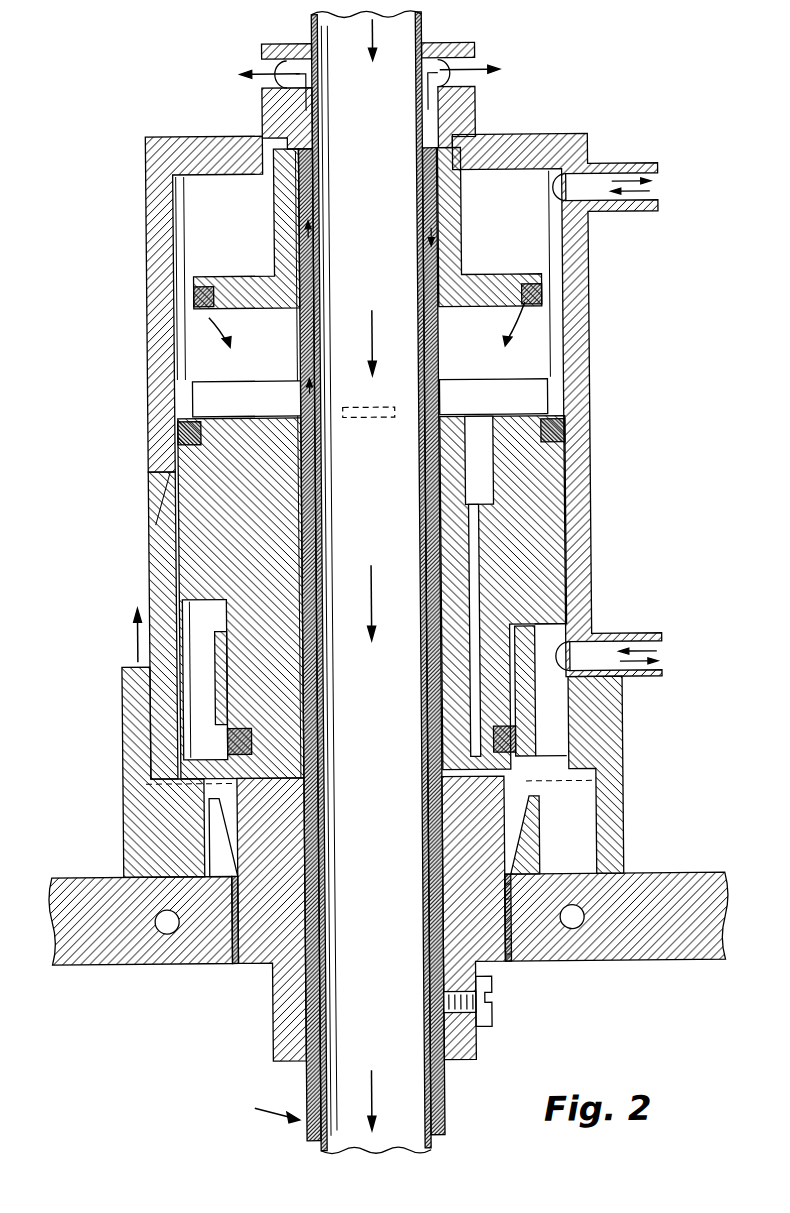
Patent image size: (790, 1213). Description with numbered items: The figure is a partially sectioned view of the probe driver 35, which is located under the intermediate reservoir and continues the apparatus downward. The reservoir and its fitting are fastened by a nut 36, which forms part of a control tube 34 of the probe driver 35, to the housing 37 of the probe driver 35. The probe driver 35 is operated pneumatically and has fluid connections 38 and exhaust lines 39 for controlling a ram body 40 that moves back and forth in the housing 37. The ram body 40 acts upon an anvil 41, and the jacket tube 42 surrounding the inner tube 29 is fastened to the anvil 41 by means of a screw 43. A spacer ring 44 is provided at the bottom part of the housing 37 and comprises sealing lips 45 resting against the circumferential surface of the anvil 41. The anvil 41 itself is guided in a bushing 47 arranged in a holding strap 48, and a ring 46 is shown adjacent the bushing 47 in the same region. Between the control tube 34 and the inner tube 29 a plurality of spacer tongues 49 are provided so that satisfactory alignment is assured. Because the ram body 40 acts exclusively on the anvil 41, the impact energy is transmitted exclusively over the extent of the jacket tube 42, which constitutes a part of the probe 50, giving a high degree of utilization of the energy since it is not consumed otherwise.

The inner tube 29 is at (424, 19).
The control tube 34 is at (303, 508).
The probe driver 35 is at (630, 329).
The nut 36 is at (262, 100).
The housing 37 is at (588, 385).
The fluid connections 38 is at (615, 165).
The exhaust lines 39 is at (470, 64).
The ram body 40 is at (545, 534).
The anvil 41 is at (262, 990).
The jacket tube 42 is at (428, 1101).
The screw 43 is at (486, 1012).
The spacer ring 44 is at (617, 762).
The sealing lips 45 is at (505, 812).
The bearing ring 46 is at (499, 928).
The bushing 47 is at (502, 931).
The holding strap 48 is at (663, 963).
The spacer tongues 49 is at (427, 735).
The probe 50 is at (260, 1109).